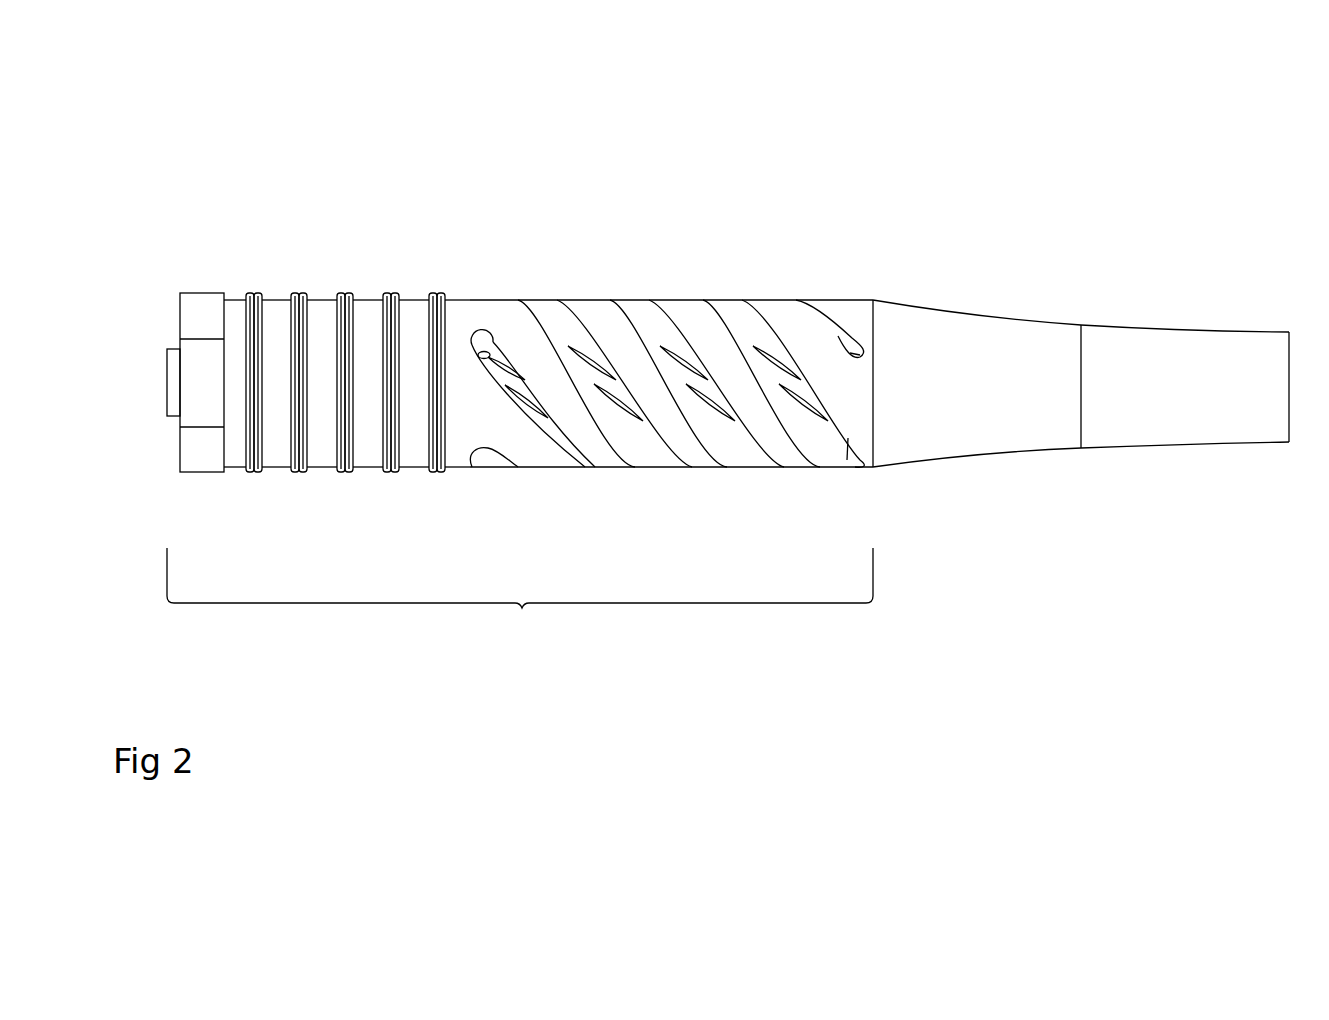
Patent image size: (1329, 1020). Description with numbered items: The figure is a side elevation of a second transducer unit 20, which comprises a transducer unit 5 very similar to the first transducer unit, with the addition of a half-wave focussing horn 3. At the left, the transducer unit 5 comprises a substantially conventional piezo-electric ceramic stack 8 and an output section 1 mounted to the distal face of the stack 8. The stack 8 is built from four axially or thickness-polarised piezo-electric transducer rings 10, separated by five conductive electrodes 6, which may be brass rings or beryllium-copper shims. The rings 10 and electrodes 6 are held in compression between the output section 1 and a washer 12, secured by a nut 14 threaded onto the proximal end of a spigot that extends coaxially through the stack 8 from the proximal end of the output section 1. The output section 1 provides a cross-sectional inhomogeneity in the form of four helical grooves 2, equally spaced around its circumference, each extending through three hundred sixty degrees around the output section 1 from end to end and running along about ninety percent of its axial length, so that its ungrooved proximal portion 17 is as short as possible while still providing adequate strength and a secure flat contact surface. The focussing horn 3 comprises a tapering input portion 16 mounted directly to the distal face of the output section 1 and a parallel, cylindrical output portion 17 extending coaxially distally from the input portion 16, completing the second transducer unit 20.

The output section 1 is at (698, 213).
The helical grooves 2 is at (557, 322).
The half-wave focussing horn 3 is at (920, 213).
The transducer unit 5 is at (522, 606).
The conductive electrodes 6 is at (300, 313).
The piezo-electric ceramic stack 8 is at (322, 212).
The piezo-electric transducer rings 10 is at (322, 315).
The washer 12 is at (233, 330).
The nut 14 is at (205, 453).
The tapering input portion 16 is at (945, 430).
The ungrooved proximal portion / cylindrical output portion 17 is at (460, 315).
The second transducer unit 20 is at (1082, 170).